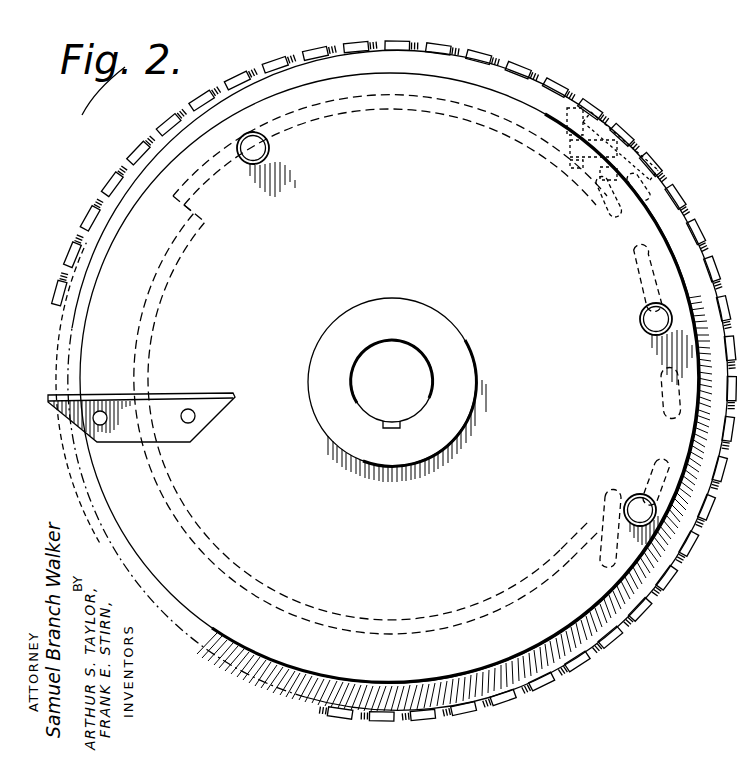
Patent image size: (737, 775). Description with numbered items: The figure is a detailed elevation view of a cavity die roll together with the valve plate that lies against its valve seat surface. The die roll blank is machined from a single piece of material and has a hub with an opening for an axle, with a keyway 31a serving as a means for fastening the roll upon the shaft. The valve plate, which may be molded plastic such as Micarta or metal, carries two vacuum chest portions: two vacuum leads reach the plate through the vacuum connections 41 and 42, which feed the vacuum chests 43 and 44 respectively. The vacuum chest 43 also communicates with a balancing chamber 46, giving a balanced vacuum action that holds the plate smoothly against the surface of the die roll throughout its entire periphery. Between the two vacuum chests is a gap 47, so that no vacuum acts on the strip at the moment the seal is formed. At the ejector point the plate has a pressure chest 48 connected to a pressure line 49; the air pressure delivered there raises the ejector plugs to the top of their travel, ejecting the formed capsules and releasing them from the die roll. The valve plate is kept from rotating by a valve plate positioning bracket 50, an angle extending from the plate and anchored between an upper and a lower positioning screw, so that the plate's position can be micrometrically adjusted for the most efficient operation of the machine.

The keyway 31a is at (392, 426).
The vacuum connection 41 is at (270, 148).
The vacuum connection 42 is at (640, 320).
The vacuum chest 43 is at (493, 128).
The vacuum chest 44 is at (640, 268).
The balancing chamber 46 is at (288, 600).
The gap 47 is at (630, 230).
The pressure chest 48 is at (645, 482).
The pressure line 49 is at (624, 510).
The valve plate positioning bracket 50 is at (170, 394).